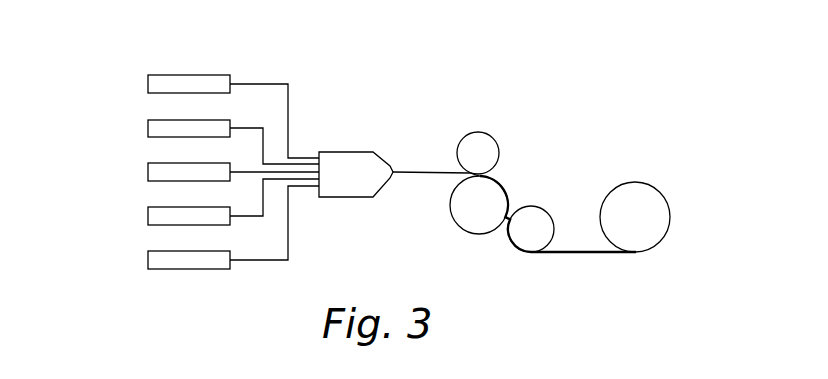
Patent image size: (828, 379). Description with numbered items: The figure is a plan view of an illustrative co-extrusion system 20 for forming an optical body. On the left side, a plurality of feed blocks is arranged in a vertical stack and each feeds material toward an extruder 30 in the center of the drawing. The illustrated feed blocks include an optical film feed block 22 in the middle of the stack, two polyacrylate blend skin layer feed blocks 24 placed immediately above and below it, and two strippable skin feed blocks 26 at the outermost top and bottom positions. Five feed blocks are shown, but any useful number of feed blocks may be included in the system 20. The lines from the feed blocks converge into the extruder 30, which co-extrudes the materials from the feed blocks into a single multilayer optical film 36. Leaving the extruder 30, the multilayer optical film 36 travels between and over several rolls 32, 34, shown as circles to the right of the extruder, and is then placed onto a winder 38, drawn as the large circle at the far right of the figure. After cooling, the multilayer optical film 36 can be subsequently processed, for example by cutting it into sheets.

The co-extrusion system 20 is at (565, 89).
The optical film feed block 22 is at (148, 172).
The polyacrylate blend skin layer feed block 24 is at (148, 128).
The strippable skin feed block 26 is at (148, 84).
The extruder 30 is at (354, 159).
The roll 32 is at (486, 142).
The roll 34 is at (464, 223).
The multilayer optical film 36 is at (578, 253).
The winder 38 is at (624, 192).